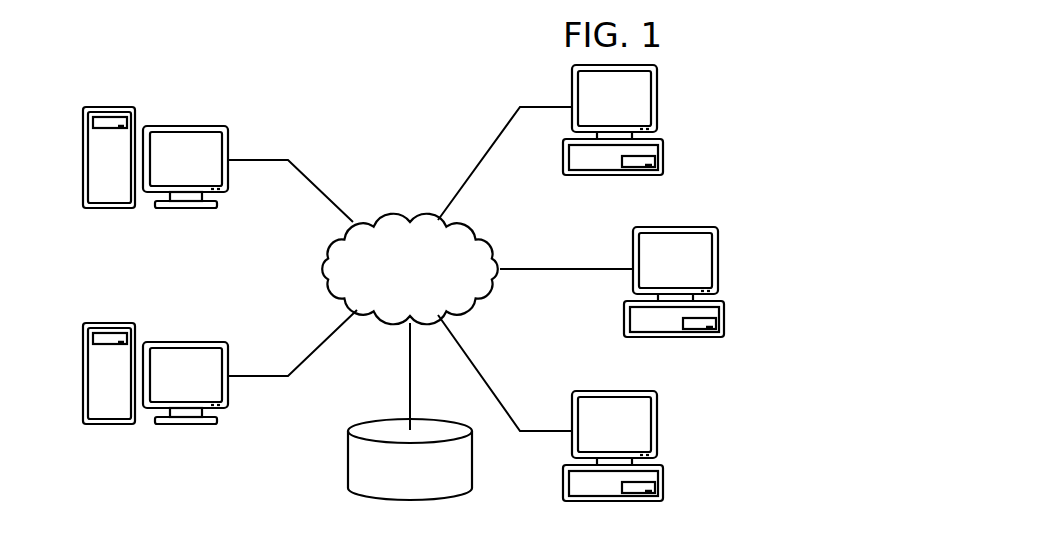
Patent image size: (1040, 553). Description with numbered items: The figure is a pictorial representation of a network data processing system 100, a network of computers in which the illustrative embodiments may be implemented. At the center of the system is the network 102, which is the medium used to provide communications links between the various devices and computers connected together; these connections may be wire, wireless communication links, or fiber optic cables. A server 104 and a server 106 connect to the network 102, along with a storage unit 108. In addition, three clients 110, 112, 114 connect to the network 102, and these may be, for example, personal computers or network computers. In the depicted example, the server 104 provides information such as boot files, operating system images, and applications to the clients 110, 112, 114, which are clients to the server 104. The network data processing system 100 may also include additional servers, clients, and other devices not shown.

The network data processing system 100 is at (291, 77).
The network 102 is at (407, 215).
The server 104 is at (82, 158).
The server 106 is at (82, 374).
The storage unit 108 is at (348, 460).
The client 110 is at (665, 157).
The client 112 is at (725, 318).
The client 114 is at (665, 483).